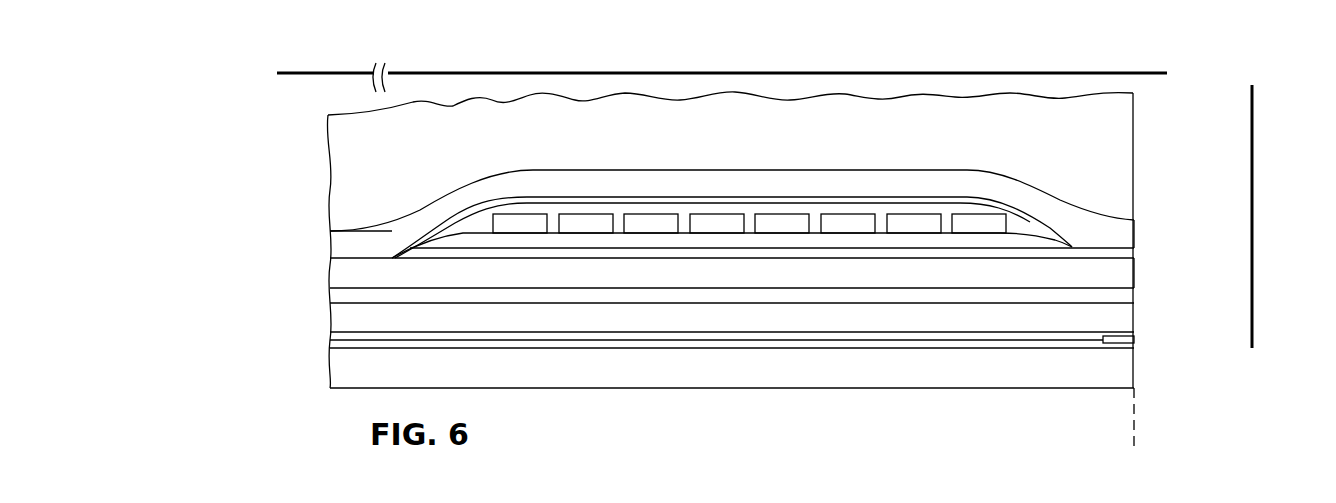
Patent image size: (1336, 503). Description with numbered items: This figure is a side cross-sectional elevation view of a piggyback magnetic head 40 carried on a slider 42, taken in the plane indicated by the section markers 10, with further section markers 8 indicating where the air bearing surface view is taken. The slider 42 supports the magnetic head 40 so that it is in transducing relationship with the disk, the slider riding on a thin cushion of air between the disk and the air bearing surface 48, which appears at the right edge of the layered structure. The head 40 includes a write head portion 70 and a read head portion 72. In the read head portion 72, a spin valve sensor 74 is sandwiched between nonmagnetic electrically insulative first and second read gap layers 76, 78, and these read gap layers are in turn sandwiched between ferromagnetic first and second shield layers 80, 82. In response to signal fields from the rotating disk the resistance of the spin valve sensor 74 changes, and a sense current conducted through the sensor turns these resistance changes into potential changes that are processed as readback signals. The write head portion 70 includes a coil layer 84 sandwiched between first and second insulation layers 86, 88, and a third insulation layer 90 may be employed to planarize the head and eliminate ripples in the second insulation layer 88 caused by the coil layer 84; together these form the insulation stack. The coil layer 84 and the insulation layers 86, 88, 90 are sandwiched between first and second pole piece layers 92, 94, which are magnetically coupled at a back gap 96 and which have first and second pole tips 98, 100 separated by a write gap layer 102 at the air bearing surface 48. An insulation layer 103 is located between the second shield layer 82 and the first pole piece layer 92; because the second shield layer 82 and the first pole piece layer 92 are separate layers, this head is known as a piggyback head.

The section line for the ABS view 8 is at (1310, 345).
The section line 10 is at (283, 73).
The magnetic head 40 is at (305, 122).
The slider 42 is at (1118, 123).
The air bearing surface (ABS) 48 is at (1137, 440).
The write head portion 70 is at (273, 290).
The read head portion 72 is at (273, 390).
The spin valve sensor 74 is at (1134, 340).
The first read gap layer 76 is at (798, 348).
The second read gap layer 78 is at (766, 332).
The first shield layer 80 is at (903, 373).
The second shield layer 82 is at (1005, 318).
The coil layer 84 is at (780, 220).
The first insulation layer 86 is at (688, 243).
The second insulation layer 88 is at (1020, 223).
The third insulation layer 90 is at (558, 198).
The first pole piece layer 92 is at (1052, 275).
The second pole piece layer 94 is at (913, 178).
The back gap 96 is at (368, 258).
The first pole tip 98 is at (1135, 272).
The second pole tip 100 is at (1127, 230).
The write gap layer 102 is at (1130, 250).
The insulation layer 103 is at (960, 295).